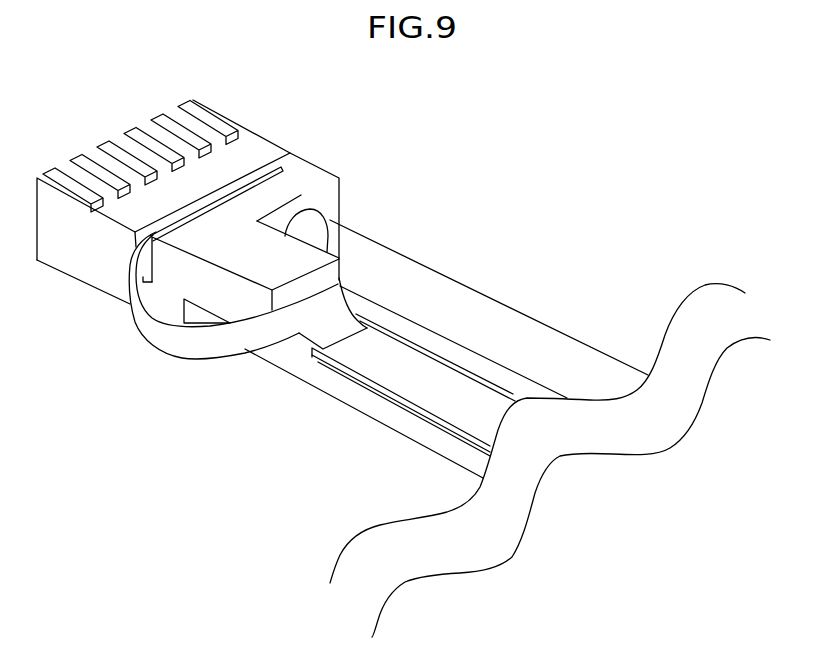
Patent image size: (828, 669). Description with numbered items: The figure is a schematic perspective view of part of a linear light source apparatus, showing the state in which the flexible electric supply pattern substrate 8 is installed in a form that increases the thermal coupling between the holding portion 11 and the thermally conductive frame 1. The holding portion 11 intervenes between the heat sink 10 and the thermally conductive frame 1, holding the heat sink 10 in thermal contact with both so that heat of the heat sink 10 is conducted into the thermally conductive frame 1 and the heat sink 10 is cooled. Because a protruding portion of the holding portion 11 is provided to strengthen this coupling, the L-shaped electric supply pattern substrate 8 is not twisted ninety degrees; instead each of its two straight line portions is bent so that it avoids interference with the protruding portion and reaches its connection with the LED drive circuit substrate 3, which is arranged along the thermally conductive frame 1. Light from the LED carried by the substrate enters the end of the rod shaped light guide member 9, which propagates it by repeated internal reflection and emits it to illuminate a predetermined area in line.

The thermally conductive frame 1 is at (408, 440).
The LED drive circuit substrate 3 is at (390, 372).
The electric supply pattern substrate 8 is at (195, 343).
The light guide member 9 is at (455, 275).
The heat sink 10 is at (205, 103).
The holding portion 11 is at (309, 158).